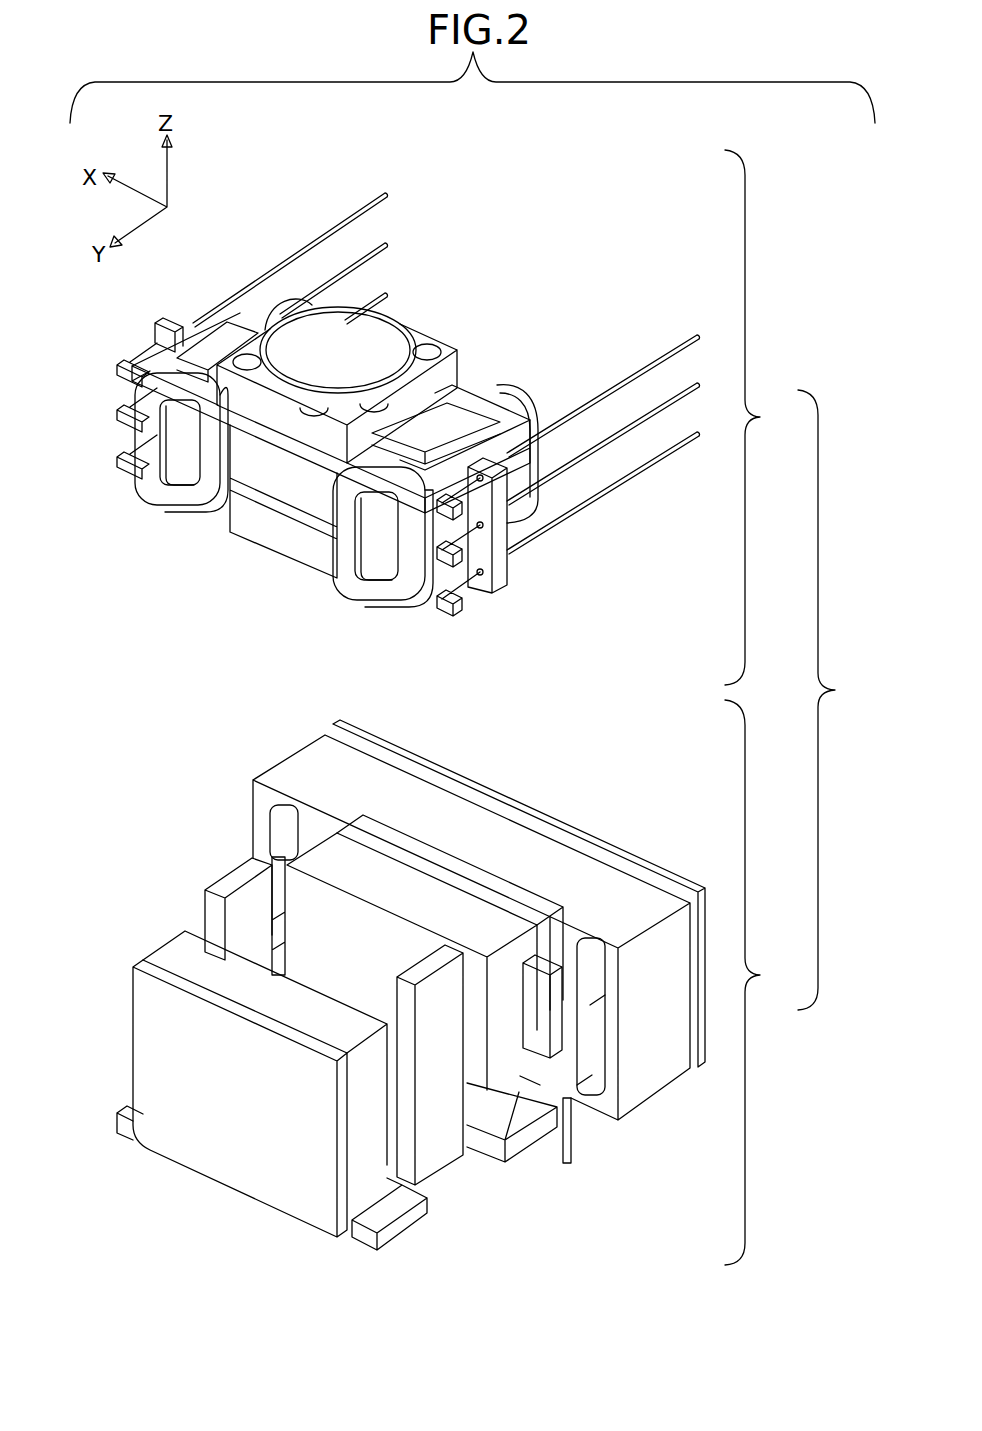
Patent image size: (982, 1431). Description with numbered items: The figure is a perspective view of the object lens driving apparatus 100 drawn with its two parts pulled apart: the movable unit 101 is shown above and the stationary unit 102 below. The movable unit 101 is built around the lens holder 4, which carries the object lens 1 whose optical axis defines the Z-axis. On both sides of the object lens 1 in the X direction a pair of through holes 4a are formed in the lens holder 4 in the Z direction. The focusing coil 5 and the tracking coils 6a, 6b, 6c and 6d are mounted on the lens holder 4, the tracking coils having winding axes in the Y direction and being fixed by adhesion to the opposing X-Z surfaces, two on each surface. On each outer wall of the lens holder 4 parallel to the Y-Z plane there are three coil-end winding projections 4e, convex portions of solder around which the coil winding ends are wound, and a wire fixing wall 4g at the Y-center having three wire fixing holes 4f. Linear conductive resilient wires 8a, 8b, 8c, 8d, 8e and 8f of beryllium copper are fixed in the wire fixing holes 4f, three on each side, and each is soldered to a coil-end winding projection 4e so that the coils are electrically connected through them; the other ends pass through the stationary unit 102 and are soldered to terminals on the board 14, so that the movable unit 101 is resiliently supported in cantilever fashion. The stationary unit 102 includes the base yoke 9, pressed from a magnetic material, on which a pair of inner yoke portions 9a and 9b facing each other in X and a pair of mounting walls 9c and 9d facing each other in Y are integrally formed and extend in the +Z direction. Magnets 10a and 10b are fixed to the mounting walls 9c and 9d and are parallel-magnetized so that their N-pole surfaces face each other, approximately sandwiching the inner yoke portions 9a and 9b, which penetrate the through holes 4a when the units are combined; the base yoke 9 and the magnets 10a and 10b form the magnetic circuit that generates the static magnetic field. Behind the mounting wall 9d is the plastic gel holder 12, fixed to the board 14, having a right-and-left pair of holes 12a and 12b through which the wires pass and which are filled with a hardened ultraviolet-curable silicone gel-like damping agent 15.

The object lens 1 is at (377, 338).
The lens holder 4 is at (213, 322).
The through holes 4a is at (470, 420).
The coil-end winding projections 4e is at (118, 467).
The wire fixing holes 4f is at (483, 573).
The wire fixing wall 4g is at (167, 322).
The focusing coil 5 is at (300, 480).
The tracking coil 6a is at (175, 493).
The tracking coil 6b is at (373, 580).
The tracking coil 6c is at (500, 390).
The tracking coil 6d is at (293, 292).
The wire 8a is at (388, 194).
The wire 8b is at (388, 244).
The wire 8c is at (388, 294).
The wire 8d is at (698, 334).
The wire 8e is at (698, 382).
The wire 8f is at (698, 431).
The base yoke 9 is at (385, 1203).
The inner yoke portion 9a is at (245, 875).
The inner yoke portion 9b is at (440, 1140).
The mounting wall 9c is at (232, 1135).
The mounting wall 9d is at (430, 882).
The magnet 10a is at (180, 943).
The magnet 10b is at (305, 862).
The gel holder 12 is at (660, 1060).
The hole 12a is at (272, 845).
The hole 12b is at (602, 1078).
The board 14 is at (668, 873).
The gel-like damping agent 15 is at (283, 800).
The object lens driving apparatus 100 is at (883, 704).
The movable unit 101 is at (806, 431).
The stationary unit 102 is at (806, 989).